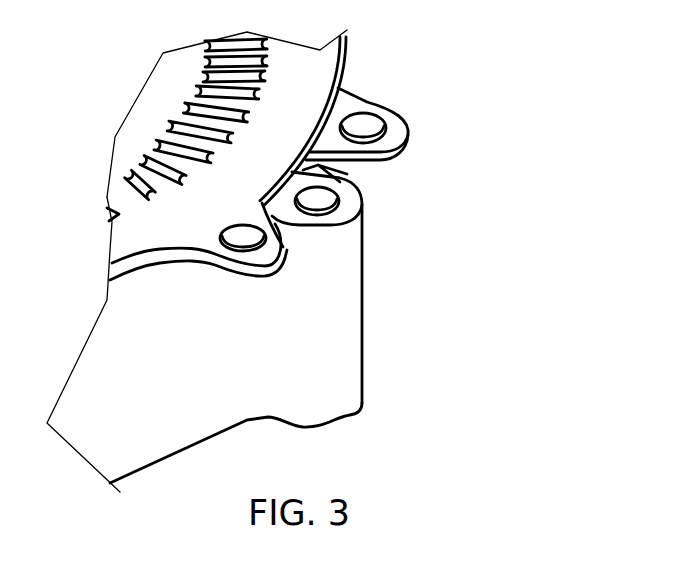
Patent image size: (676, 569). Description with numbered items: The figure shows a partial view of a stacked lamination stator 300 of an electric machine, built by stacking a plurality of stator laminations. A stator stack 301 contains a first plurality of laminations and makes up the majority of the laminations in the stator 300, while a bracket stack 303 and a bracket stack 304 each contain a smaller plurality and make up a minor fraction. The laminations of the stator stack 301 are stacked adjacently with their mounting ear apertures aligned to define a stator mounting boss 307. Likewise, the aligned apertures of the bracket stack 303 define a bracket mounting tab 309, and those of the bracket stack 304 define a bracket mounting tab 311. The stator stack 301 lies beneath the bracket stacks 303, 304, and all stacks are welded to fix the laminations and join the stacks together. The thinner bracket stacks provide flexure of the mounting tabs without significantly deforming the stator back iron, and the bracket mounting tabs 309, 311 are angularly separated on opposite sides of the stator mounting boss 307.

The stacked lamination stator 300 is at (363, 67).
The bracket mounting tab 309 is at (364, 103).
The bracket stack 303 is at (350, 172).
The stator mounting boss 307 is at (343, 343).
The bracket stack 304 is at (143, 262).
The bracket mounting tab 311 is at (270, 243).
The stator stack 301 is at (183, 400).